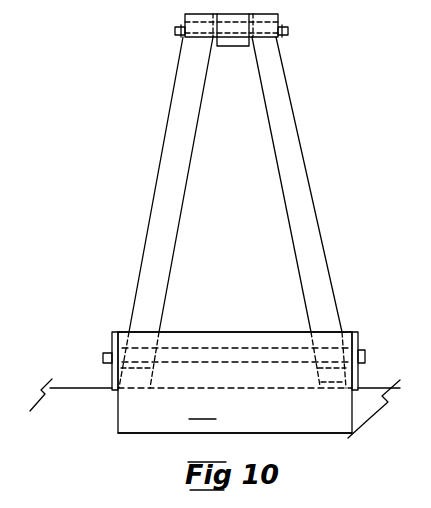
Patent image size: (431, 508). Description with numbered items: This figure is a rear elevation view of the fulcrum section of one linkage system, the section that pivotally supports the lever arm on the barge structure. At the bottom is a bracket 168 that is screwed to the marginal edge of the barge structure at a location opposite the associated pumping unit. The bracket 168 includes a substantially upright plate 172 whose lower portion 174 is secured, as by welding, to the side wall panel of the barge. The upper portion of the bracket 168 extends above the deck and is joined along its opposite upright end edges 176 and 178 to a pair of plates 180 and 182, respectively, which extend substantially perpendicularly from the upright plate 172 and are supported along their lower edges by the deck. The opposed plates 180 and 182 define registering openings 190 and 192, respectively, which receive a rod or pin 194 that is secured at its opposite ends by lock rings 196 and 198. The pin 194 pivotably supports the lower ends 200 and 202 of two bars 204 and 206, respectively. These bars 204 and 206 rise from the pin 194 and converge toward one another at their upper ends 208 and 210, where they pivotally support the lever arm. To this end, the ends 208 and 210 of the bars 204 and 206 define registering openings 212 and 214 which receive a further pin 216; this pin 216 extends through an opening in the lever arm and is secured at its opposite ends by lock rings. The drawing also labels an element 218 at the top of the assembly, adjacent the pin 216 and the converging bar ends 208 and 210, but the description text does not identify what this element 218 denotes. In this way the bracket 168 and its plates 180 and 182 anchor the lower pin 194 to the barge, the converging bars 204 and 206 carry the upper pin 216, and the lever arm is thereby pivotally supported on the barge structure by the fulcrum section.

The bracket 168 is at (238, 370).
The upright plate 172 is at (172, 340).
The lower portion 174 is at (300, 423).
The upright end edge 176 is at (128, 331).
The upright end edge 178 is at (340, 331).
The plate 180 is at (112, 333).
The plate 182 is at (354, 334).
The opening 190 is at (113, 378).
The opening 192 is at (360, 362).
The pin 194 is at (217, 350).
The lock ring 196 is at (102, 354).
The lock ring 198 is at (359, 353).
The end of bar 200 is at (163, 261).
The end of bar 202 is at (312, 264).
The bar 204 is at (167, 184).
The bar 206 is at (314, 184).
The end of bar 208 is at (182, 129).
The end of bar 210 is at (290, 126).
The opening 212 is at (195, 37).
The opening 214 is at (267, 34).
The pin 216 is at (243, 25).
The top cross bar 218 is at (228, 25).